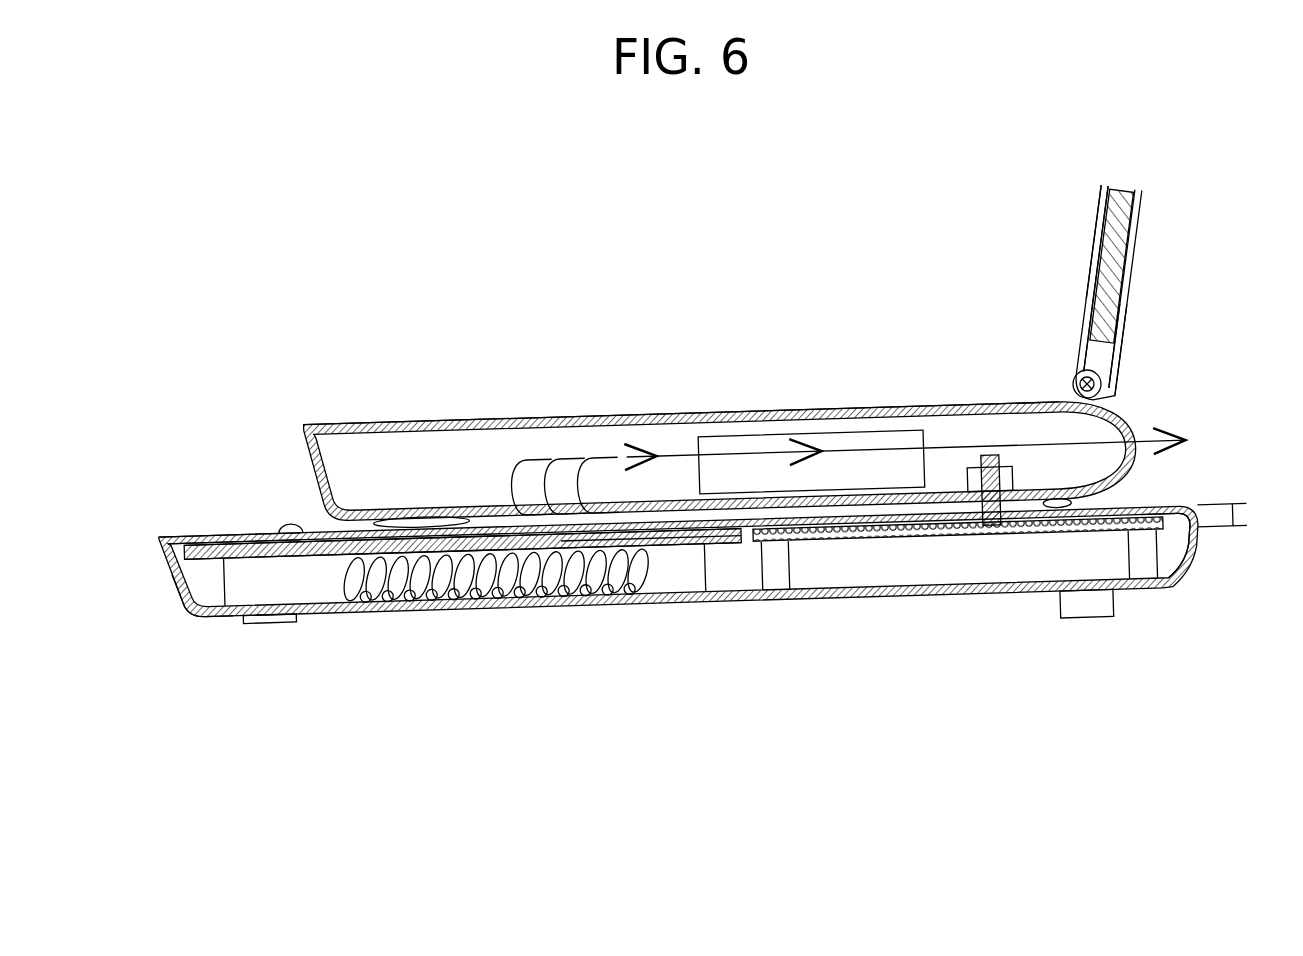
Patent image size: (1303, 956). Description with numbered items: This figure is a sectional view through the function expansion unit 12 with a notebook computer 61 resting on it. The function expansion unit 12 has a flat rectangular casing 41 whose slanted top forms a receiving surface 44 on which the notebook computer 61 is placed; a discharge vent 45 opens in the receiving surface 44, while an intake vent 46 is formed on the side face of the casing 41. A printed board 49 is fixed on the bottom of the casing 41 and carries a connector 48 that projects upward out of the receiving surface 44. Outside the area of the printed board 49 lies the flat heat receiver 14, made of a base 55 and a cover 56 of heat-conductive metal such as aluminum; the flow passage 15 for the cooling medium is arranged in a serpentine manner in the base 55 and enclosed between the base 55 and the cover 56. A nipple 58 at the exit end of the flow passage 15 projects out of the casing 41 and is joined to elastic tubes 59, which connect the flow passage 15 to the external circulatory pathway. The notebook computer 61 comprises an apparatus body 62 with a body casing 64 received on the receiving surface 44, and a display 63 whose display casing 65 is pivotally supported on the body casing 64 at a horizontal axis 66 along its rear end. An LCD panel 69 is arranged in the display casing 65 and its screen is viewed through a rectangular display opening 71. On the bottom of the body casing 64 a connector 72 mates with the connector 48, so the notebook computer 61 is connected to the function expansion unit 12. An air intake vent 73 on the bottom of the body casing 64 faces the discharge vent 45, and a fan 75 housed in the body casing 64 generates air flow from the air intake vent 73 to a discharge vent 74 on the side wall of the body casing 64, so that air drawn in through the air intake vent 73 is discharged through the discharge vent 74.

The function expansion unit 12 is at (207, 478).
The heat receiver 14 is at (255, 530).
The flow passage 15 is at (257, 548).
The casing 41 is at (859, 611).
The receiving surface 44 is at (281, 538).
The discharge vent 45 is at (627, 538).
The intake vent 46 is at (382, 606).
The connector 48 is at (1011, 524).
The printed board 49 is at (1157, 527).
The base 55 is at (192, 586).
The cover 56 is at (195, 524).
The nipple 58 is at (1217, 531).
The elastic tubes 59 is at (1238, 505).
The notebook computer 61 is at (357, 408).
The apparatus body 62 is at (423, 408).
The display 63 is at (1163, 215).
The body casing 64 is at (500, 424).
The display casing 65 is at (1119, 348).
The horizontal axis 66 is at (1102, 385).
The LCD panel 69 is at (1098, 212).
The display opening 71 is at (1095, 249).
The connector 72 is at (999, 456).
The air intake vent 73 is at (470, 505).
The discharge vent 74 is at (1133, 466).
The fan 75 is at (768, 437).